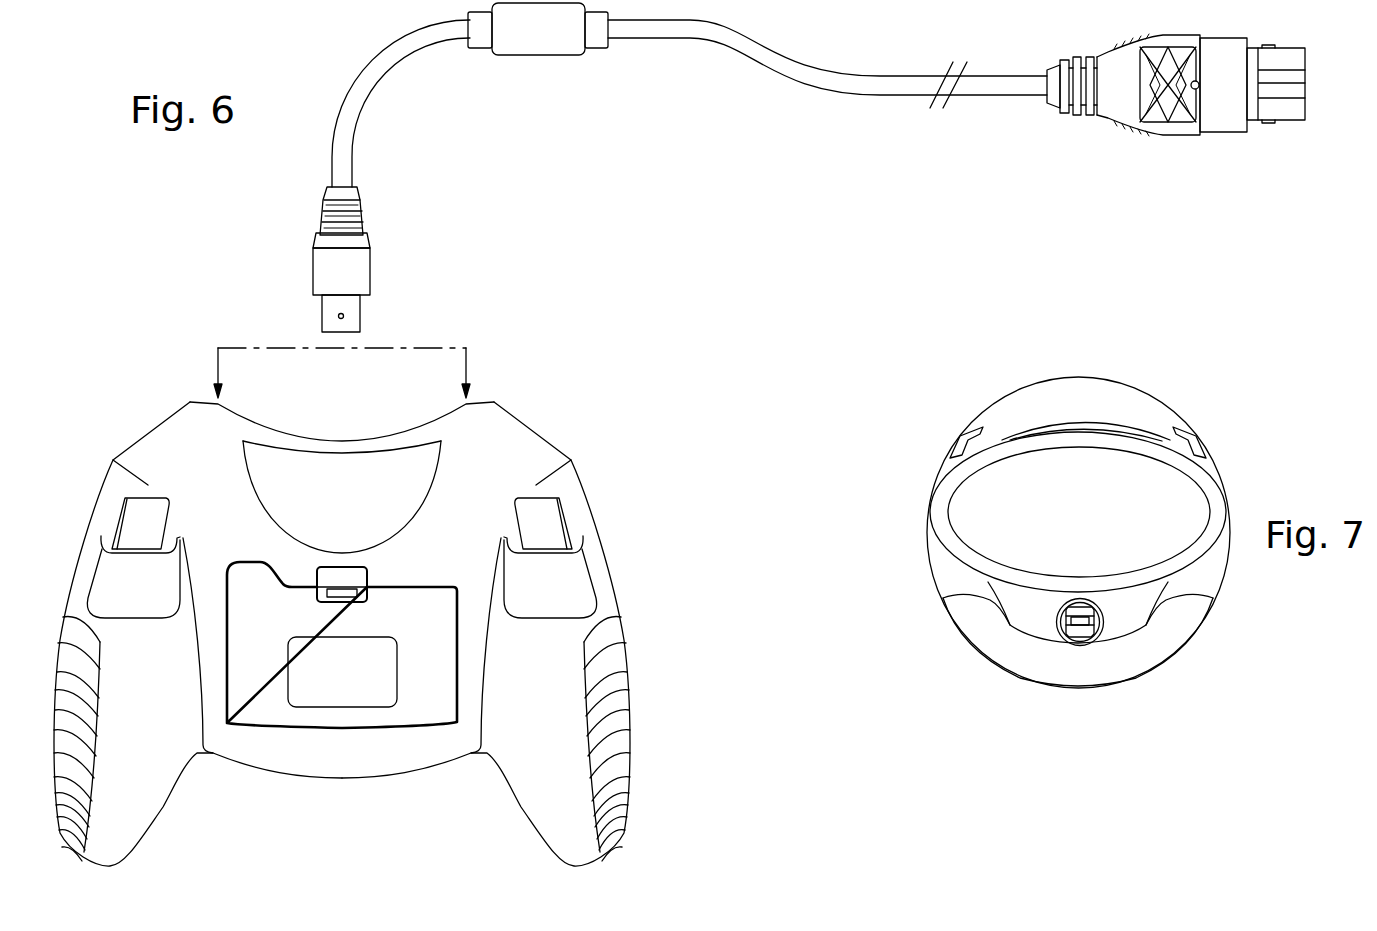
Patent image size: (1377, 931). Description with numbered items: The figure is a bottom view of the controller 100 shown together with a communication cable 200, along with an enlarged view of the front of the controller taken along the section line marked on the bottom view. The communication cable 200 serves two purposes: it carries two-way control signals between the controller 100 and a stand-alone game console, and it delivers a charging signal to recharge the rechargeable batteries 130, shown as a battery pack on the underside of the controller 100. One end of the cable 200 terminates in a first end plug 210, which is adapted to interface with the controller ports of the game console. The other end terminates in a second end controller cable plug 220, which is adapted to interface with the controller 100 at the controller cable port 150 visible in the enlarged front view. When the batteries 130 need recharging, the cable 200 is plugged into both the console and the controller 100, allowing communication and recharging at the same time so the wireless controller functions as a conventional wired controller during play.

In FIG. 6, the controller 100 is at (545, 420).
In FIG. 6, the rechargeable batteries 130 is at (417, 708).
In FIG. 7, the controller cable port 150 is at (1080, 632).
In FIG. 6, the communication cable 200 is at (695, 28).
In FIG. 6, the first end plug 210 is at (1225, 117).
In FIG. 6, the controller cable plug 220 is at (353, 264).